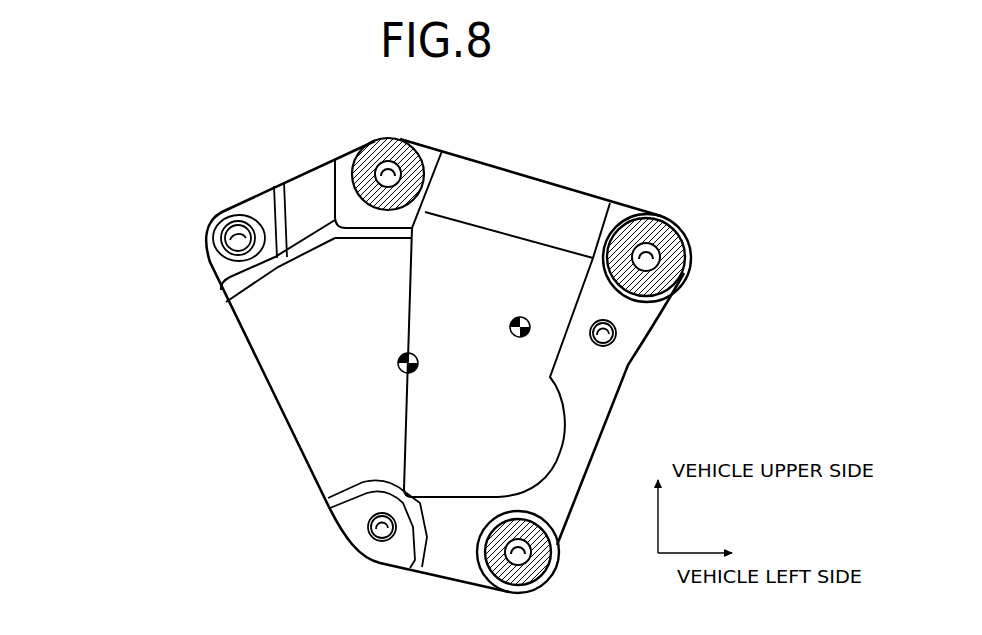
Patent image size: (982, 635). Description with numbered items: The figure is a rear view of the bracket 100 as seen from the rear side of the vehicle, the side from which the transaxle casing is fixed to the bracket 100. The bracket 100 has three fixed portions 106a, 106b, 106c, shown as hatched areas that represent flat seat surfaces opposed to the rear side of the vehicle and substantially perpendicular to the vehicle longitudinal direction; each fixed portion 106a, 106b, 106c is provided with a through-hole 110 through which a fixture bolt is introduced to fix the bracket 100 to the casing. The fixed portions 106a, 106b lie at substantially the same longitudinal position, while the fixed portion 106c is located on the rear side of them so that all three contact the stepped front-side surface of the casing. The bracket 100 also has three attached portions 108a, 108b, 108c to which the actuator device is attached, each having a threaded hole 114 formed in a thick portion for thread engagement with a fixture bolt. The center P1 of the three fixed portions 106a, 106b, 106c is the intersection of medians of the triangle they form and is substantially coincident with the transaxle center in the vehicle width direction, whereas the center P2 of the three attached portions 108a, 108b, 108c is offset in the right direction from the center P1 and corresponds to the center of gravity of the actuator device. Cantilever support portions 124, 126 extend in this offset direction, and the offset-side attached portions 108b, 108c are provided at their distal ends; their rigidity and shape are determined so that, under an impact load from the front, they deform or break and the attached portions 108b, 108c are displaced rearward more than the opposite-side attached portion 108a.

The bracket 100 is at (563, 156).
The fixed portion 106a is at (646, 226).
The fixed portion 106b is at (540, 557).
The fixed portion 106c is at (413, 167).
The attached portion 108a is at (640, 366).
The attached portion 108b is at (326, 538).
The attached portion 108c is at (222, 204).
The through-hole 110 is at (384, 139).
The threaded hole 114 is at (230, 238).
The cantilever support portion 124 is at (450, 555).
The cantilever support portion 126 is at (304, 188).
The center of the three fixed portions P1 is at (532, 318).
The center of the three attached portions P2 is at (422, 357).